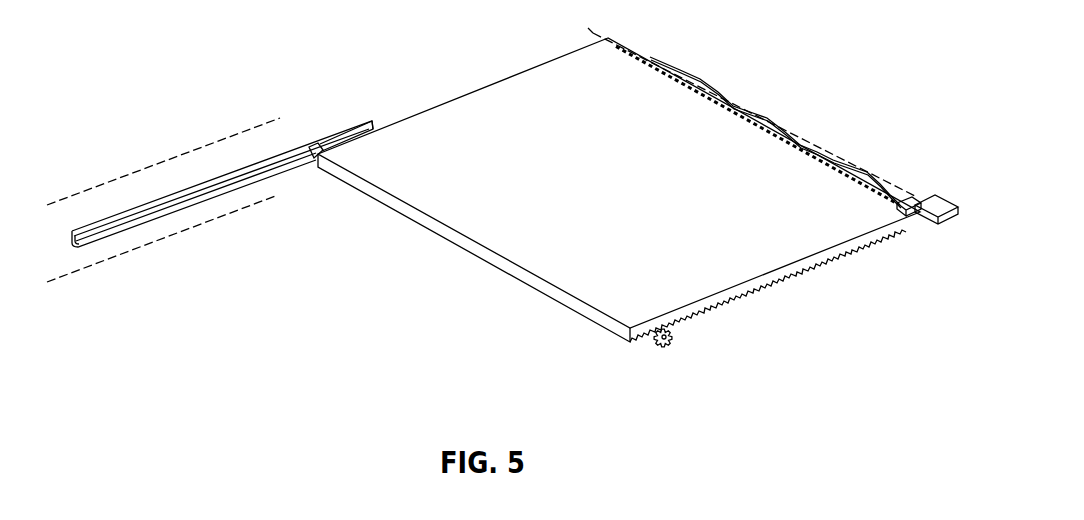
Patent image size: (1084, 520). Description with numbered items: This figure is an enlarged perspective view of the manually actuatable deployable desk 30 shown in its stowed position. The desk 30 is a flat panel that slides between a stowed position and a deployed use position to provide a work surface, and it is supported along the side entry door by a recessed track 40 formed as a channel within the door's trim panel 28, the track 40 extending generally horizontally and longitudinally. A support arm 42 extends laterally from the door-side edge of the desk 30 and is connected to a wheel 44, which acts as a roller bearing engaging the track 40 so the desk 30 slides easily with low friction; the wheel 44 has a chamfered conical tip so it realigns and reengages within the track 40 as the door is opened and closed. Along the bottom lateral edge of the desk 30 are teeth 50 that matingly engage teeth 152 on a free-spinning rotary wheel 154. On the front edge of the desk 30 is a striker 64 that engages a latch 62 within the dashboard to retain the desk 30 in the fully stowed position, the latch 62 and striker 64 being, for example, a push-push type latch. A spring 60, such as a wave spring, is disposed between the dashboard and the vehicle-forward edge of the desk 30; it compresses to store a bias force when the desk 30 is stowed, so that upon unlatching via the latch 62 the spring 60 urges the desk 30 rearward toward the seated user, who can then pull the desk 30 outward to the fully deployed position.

The trim panel 28 is at (75, 213).
The deployable desk 30 is at (543, 97).
The track 40 is at (102, 240).
The support arm 42 is at (320, 143).
The wheel 44 is at (310, 147).
The teeth 50 is at (833, 266).
The spring 60 is at (723, 85).
The latch 62 is at (933, 200).
The striker 64 is at (900, 206).
The teeth 152 is at (653, 350).
The rotary wheel 154 is at (677, 337).